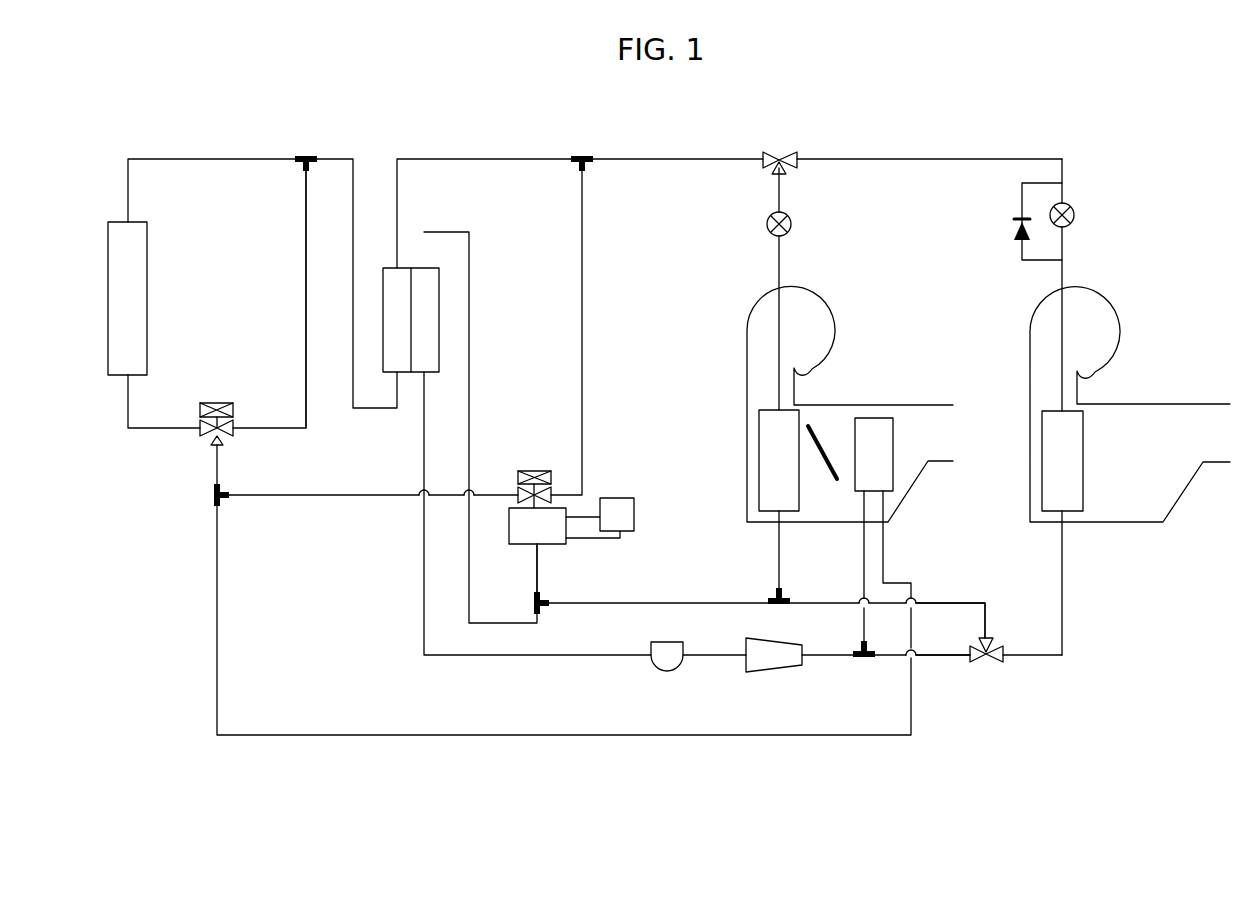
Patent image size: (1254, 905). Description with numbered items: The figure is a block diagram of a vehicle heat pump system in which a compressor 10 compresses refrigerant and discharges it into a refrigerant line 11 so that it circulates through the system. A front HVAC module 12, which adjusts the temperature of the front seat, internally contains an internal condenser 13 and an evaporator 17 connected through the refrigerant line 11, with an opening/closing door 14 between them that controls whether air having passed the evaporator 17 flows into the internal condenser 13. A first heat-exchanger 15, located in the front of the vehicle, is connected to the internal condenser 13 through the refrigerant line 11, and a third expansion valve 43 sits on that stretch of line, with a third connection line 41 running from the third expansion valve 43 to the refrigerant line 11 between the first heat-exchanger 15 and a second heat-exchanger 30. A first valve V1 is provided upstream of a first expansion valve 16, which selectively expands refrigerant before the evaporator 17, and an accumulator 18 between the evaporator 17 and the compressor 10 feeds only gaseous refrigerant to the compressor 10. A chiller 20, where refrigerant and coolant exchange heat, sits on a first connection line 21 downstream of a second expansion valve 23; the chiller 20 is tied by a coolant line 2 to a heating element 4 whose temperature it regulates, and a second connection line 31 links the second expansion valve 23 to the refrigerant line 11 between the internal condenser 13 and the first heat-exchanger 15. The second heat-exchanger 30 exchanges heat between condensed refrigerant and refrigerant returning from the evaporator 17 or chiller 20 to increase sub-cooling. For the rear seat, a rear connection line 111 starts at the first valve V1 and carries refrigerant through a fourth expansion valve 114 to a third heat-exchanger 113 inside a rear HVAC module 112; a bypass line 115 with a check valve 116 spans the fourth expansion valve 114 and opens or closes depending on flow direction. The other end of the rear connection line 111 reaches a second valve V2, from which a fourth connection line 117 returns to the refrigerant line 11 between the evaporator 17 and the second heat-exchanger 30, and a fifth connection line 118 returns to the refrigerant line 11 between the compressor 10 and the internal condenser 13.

The refrigerant line 11 is at (235, 163).
The rear connection line 111 is at (890, 163).
The second connection line 31 is at (290, 498).
The first connection line 21 is at (582, 360).
The third connection line 41 is at (306, 258).
The first heat-exchanger 15 is at (148, 268).
The third expansion valve 43 is at (217, 403).
The second heat-exchanger 30 is at (412, 378).
The second expansion valve 23 is at (534, 468).
The chiller 20 is at (520, 546).
The coolant line 2 is at (596, 518).
The heating element 4 is at (634, 502).
The accumulator 18 is at (670, 672).
The compressor 10 is at (775, 672).
The first valve V1 is at (786, 150).
The first expansion valve 16 is at (792, 224).
The front HVAC module 12 is at (878, 384).
The evaporator 17 is at (759, 444).
The opening/closing door 14 is at (818, 432).
The internal condenser 13 is at (888, 418).
The bypass line 115 is at (1022, 208).
The check valve 116 is at (1016, 245).
The fourth expansion valve 114 is at (1075, 215).
The rear HVAC module 112 is at (1134, 396).
The third heat-exchanger 113 is at (1042, 490).
The fourth connection line 117 is at (971, 600).
The fifth connection line 118 is at (955, 658).
The second valve V2 is at (994, 658).